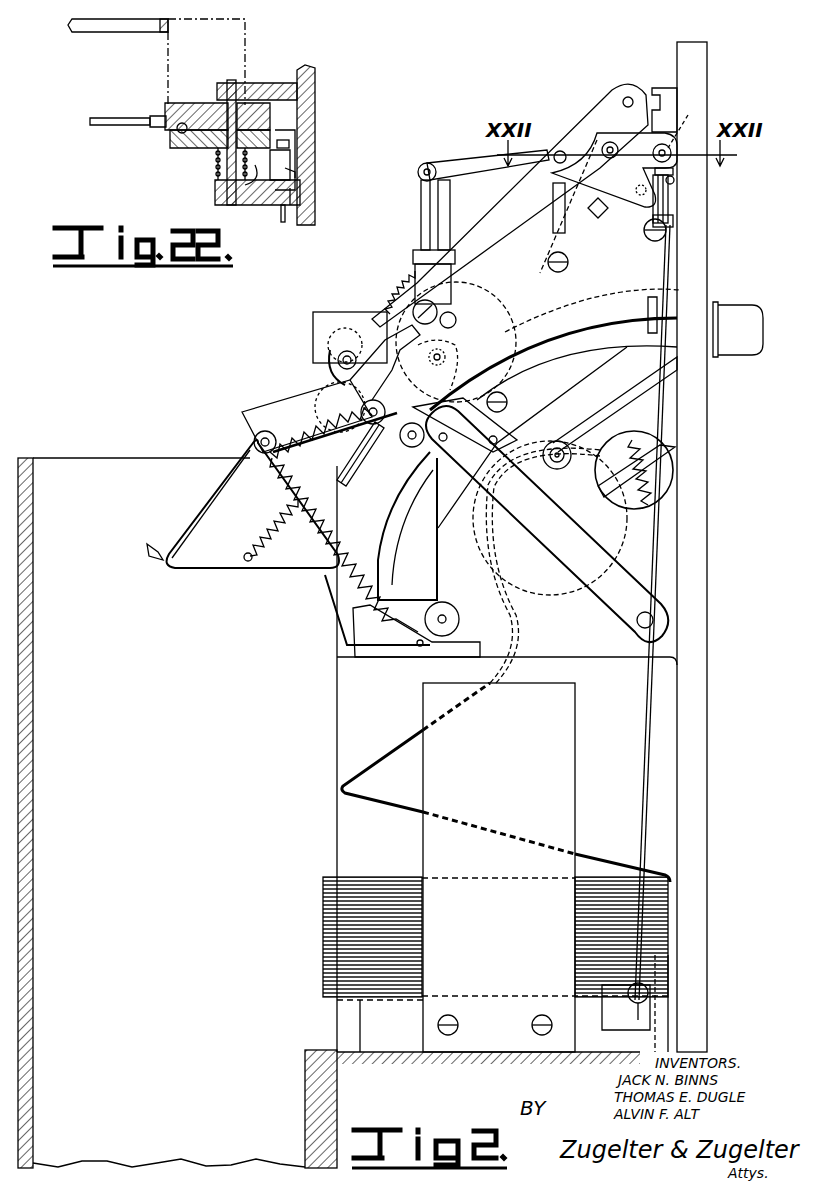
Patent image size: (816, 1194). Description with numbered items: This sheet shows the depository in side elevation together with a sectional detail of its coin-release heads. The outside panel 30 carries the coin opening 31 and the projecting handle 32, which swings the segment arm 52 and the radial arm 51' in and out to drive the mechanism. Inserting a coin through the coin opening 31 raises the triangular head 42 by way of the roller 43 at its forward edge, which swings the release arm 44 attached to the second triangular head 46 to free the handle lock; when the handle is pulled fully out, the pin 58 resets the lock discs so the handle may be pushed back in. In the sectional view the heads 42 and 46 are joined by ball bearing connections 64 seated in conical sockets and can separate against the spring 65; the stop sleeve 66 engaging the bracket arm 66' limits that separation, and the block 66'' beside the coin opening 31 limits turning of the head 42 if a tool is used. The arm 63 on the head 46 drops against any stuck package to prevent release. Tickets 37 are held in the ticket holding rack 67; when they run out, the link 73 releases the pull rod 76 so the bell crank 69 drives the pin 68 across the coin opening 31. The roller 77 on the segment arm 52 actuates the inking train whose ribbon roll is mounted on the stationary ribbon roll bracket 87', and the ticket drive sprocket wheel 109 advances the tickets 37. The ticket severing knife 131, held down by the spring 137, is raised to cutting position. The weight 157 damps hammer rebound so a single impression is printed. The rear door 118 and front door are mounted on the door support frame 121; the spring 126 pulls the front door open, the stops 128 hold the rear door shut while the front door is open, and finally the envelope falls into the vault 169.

In FIG. 22, the outside panel 30 is at (315, 72).
In FIG. 2, the outside panel 30 is at (697, 522).
In FIG. 22, the coin opening 31 is at (295, 148).
In FIG. 2, the handle 32 is at (728, 312).
In FIG. 2, the tickets 37 is at (595, 850).
In FIG. 22, the triangular head 42 is at (197, 140).
In FIG. 2, the triangular head 42 is at (587, 118).
In FIG. 22, the roller 43 is at (300, 140).
In FIG. 2, the roller 43 is at (628, 147).
In FIG. 22, the release arm 44 is at (108, 125).
In FIG. 2, the release arm 44 is at (498, 206).
In FIG. 22, the second triangular head 46 is at (168, 105).
In FIG. 2, the radial arm 51' is at (532, 455).
In FIG. 2, the segment arm 52 is at (543, 353).
In FIG. 2, the pin 58 is at (647, 330).
In FIG. 22, the arm 63 is at (110, 33).
In FIG. 22, the ball bearing connections 64 is at (172, 148).
In FIG. 2, the ball bearing connections 64 is at (560, 150).
In FIG. 22, the spring 65 is at (215, 165).
In FIG. 22, the stop sleeve 66 is at (250, 186).
In FIG. 22, the bracket arm 66' is at (211, 186).
In FIG. 22, the block 66'' is at (325, 189).
In FIG. 2, the ticket holding rack 67 is at (562, 727).
In FIG. 22, the pin 68 is at (300, 160).
In FIG. 2, the pin 68 is at (675, 180).
In FIG. 22, the bell crank 69 is at (290, 208).
In FIG. 2, the bell crank 69 is at (673, 200).
In FIG. 2, the link 73 is at (625, 1030).
In FIG. 22, the pull rod 76 is at (281, 215).
In FIG. 2, the pull rod 76 is at (648, 752).
In FIG. 2, the roller 77 is at (408, 455).
In FIG. 2, the ribbon roll bracket 87' is at (328, 372).
In FIG. 2, the ticket drive sprocket wheel 109 is at (548, 590).
In FIG. 2, the rear door 118 is at (200, 520).
In FIG. 2, the door support frame 121 is at (283, 403).
In FIG. 2, the spring 126 is at (340, 583).
In FIG. 2, the stops 128 is at (378, 640).
In FIG. 2, the ticket severing knife 131 is at (610, 490).
In FIG. 2, the spring 137 is at (645, 455).
In FIG. 2, the weight 157 is at (413, 266).
In FIG. 2, the vault 169 is at (300, 1083).